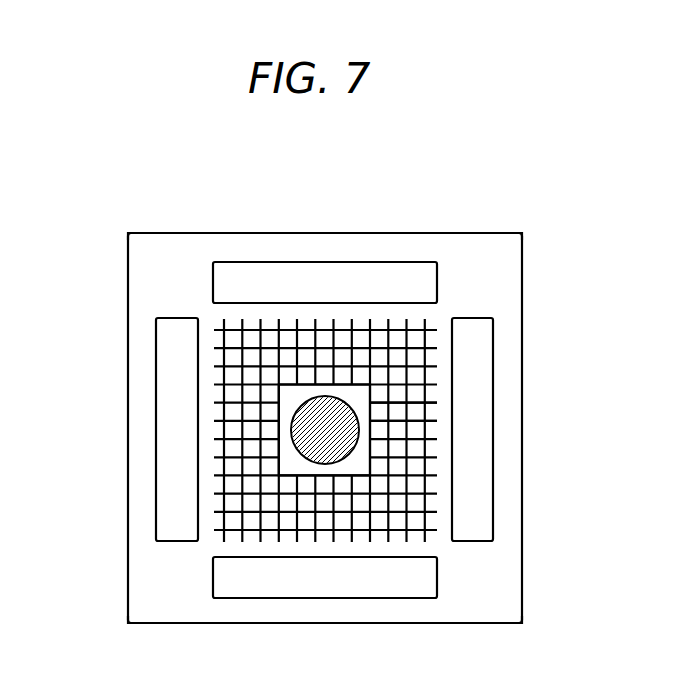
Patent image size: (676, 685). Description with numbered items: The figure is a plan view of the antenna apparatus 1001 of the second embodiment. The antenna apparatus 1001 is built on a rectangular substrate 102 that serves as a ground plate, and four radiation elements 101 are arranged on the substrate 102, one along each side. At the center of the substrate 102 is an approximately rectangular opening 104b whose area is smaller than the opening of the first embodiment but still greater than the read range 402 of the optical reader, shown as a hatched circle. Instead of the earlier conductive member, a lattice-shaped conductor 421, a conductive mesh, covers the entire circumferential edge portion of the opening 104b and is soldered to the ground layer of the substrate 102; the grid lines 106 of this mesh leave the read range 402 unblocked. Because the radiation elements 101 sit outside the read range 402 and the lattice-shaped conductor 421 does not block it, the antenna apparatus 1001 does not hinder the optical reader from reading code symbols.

The antenna apparatus 1001 is at (128, 192).
The substrate 102 is at (197, 247).
The radiation elements 101 is at (334, 275).
The lattice-shaped conductor 421 is at (418, 334).
The grid lines 106 is at (408, 415).
The read range 402 is at (358, 449).
The opening 104b is at (352, 466).